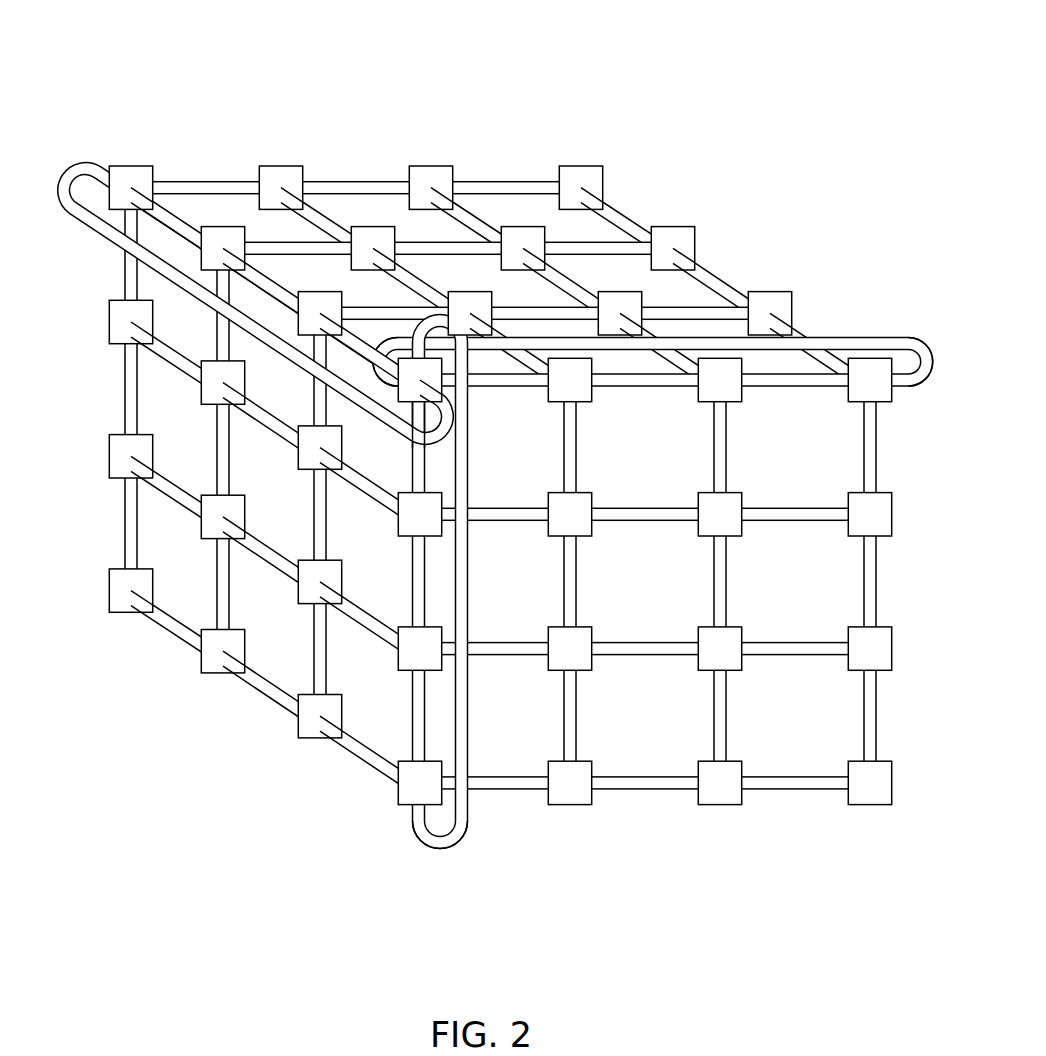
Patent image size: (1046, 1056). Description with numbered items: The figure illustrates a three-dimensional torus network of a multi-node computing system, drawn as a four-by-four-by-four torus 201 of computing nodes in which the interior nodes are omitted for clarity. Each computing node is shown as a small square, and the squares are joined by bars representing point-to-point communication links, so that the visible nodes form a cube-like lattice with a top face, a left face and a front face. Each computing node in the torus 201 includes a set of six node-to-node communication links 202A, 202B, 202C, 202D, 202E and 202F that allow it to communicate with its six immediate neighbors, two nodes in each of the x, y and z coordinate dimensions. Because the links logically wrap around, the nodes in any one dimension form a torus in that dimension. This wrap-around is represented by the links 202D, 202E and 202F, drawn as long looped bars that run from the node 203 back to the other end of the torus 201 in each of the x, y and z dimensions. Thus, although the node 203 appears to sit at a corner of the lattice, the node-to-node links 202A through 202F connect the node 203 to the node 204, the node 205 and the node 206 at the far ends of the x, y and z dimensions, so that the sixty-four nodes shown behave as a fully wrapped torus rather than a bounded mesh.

The torus 201 is at (498, 458).
The node-to-node communication link 202A is at (640, 326).
The node-to-node communication link 202B is at (481, 607).
The node-to-node communication link 202C is at (376, 346).
The node-to-node communication link 202D is at (892, 337).
The node-to-node communication link 202E is at (441, 849).
The node-to-node communication link 202F is at (76, 162).
The node 203 is at (411, 388).
The node 204 is at (134, 173).
The node 205 is at (878, 388).
The node 206 is at (410, 793).